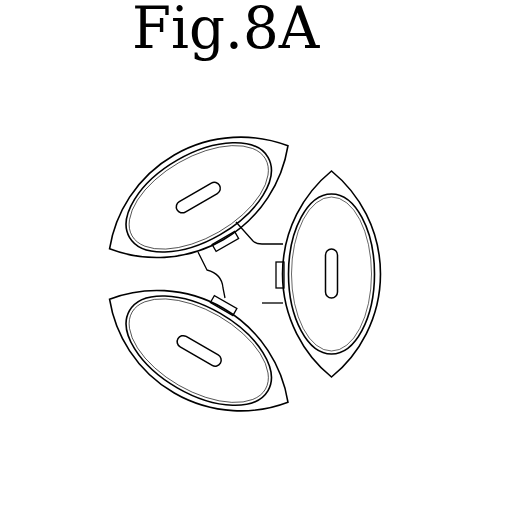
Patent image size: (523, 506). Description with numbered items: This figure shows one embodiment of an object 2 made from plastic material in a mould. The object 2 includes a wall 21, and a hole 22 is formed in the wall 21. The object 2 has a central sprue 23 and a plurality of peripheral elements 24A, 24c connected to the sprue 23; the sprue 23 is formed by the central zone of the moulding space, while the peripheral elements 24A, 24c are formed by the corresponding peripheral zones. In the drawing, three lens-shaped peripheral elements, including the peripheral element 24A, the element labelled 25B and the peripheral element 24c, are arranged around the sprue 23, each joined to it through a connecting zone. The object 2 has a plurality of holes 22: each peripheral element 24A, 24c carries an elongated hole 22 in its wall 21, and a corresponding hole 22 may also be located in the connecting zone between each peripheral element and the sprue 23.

The object 2 is at (107, 210).
The wall 21 is at (158, 198).
The hole 22 is at (200, 191).
The sprue 23 is at (250, 283).
The peripheral element 24A is at (240, 165).
The second blade plate 25B is at (350, 238).
The peripheral element 24c is at (232, 386).